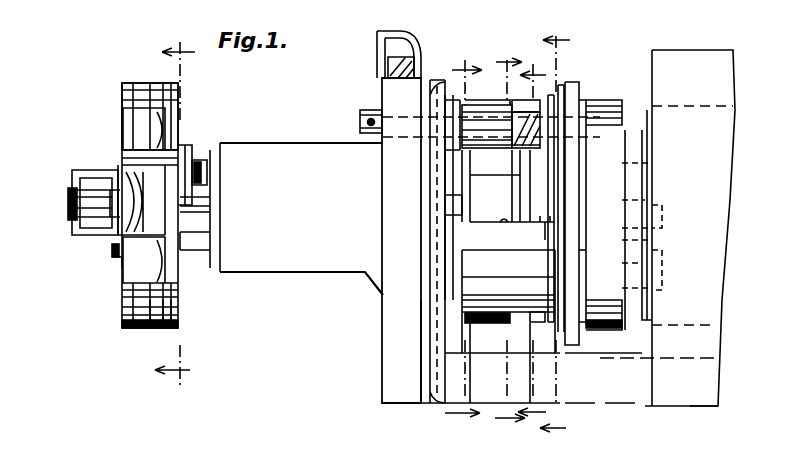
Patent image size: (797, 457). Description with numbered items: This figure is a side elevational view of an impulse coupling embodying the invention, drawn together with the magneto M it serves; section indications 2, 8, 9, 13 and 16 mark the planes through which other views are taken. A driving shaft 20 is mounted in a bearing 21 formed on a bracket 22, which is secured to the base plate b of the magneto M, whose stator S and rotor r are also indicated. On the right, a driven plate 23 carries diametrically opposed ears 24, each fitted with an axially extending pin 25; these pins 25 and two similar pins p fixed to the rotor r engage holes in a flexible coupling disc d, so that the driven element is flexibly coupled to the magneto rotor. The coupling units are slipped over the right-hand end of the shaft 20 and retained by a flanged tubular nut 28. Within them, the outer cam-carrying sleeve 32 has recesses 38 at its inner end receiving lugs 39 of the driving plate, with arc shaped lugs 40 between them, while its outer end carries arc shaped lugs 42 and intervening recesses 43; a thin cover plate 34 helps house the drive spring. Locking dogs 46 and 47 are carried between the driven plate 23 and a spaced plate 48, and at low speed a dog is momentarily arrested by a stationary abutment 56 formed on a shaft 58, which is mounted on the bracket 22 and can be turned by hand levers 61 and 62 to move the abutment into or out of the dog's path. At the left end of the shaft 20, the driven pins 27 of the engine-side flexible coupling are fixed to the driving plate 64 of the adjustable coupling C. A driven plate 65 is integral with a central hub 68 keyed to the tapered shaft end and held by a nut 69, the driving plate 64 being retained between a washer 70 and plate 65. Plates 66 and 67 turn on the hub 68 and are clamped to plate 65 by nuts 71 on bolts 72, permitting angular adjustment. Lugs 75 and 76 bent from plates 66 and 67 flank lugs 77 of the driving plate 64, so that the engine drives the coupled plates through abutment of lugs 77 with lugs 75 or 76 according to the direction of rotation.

The adjustable coupling C is at (154, 62).
The section line 2 is at (463, 247).
The section line 8 is at (510, 247).
The section line 9 is at (555, 235).
The section line 13 is at (534, 246).
The section line 16 is at (178, 215).
The driving shaft 20 is at (68, 200).
The bearing 21 is at (301, 219).
The bracket 22 is at (388, 378).
The driven plate 23 is at (578, 162).
The ears 24 is at (572, 90).
The pins 25 is at (612, 112).
The driven pins 27 is at (82, 228).
The flanged tubular nut 28 is at (578, 260).
The outer cam-carrying sleeve 32 is at (486, 320).
The cover plate 34 is at (498, 226).
The recesses 38 is at (482, 192).
The lugs 39 is at (476, 358).
The arc shaped lugs 40 is at (465, 291).
The arc shaped lugs 42 is at (462, 298).
The recesses 43 is at (522, 226).
The locking dog 46 is at (520, 168).
The locking dog 47 is at (546, 242).
The plate 48 is at (532, 240).
The stationary abutment 56 is at (492, 128).
The shaft 58 is at (406, 140).
The hand lever 61 is at (383, 72).
The hand lever 62 is at (398, 42).
The driving plate 64 is at (122, 318).
The driven plate 65 is at (140, 330).
The plate 66 is at (158, 330).
The plate 67 is at (178, 318).
The central hub 68 is at (207, 245).
The nut 69 is at (112, 245).
The washer 70 is at (116, 260).
The nuts 71 is at (185, 158).
The bolts 72 is at (205, 172).
The lugs 75 is at (143, 128).
The lugs 76 is at (143, 279).
The lugs 77 is at (137, 190).
The magneto M is at (732, 53).
The stator S is at (690, 212).
The rotor r is at (675, 211).
The pins p is at (652, 242).
The flexible coupling disc d is at (652, 288).
The base plate b is at (698, 404).